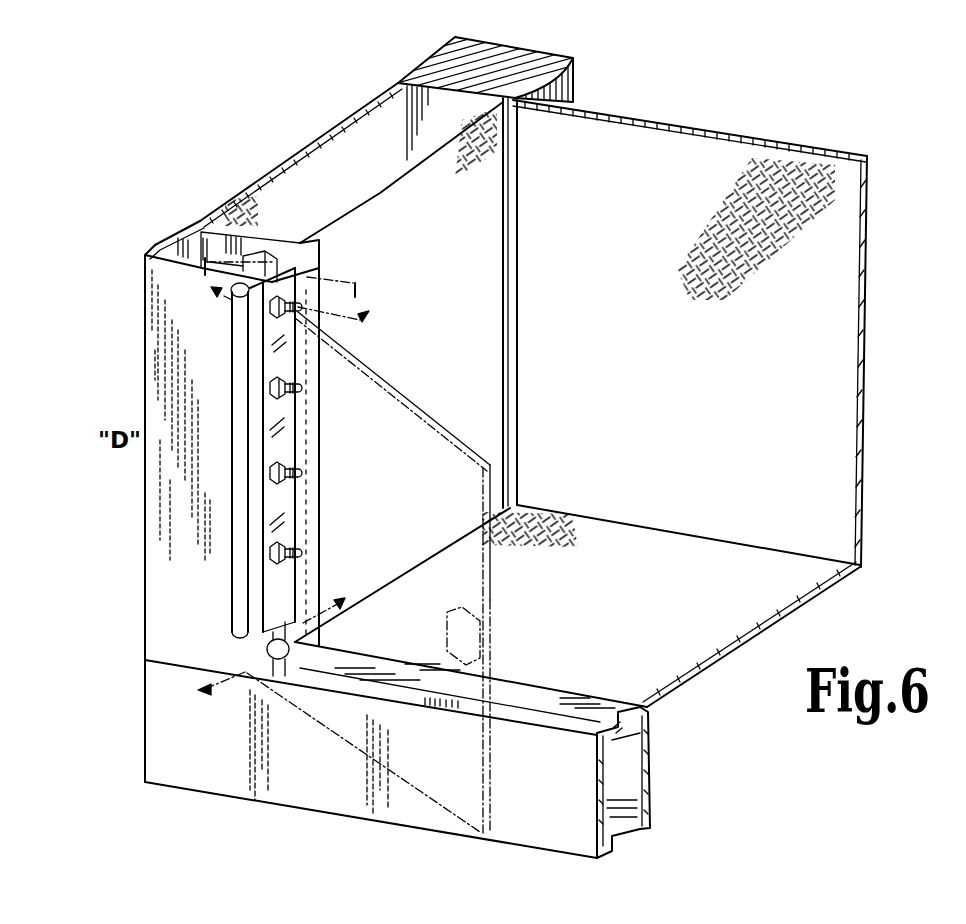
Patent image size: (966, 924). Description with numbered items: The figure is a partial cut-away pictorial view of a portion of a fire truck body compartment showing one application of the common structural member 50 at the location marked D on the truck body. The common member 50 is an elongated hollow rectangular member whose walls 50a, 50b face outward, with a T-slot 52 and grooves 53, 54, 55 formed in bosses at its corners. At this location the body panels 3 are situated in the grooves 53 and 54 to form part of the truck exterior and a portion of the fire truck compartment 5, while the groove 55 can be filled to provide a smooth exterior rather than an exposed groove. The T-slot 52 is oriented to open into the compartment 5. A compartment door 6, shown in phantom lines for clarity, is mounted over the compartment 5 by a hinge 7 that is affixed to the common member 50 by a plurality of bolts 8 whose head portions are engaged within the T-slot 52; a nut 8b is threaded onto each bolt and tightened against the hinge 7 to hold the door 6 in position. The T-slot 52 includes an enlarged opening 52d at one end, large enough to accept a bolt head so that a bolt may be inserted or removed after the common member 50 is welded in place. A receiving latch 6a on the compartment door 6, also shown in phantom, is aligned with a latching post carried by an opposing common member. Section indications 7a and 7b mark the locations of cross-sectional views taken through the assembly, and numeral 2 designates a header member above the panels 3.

The top frame member / header 2 is at (552, 63).
The body panels 3 is at (301, 163).
The fire truck compartment 5 is at (805, 428).
The compartment door 6 is at (491, 823).
The receiving latch 6a is at (485, 640).
The hinge 7 is at (322, 541).
The section line 7a is at (280, 277).
The section line 7b is at (335, 702).
The bolts 8 is at (299, 477).
The nut 8b is at (283, 486).
The common member 50 is at (585, 840).
The wall 50a is at (190, 503).
The wall 50b is at (310, 430).
The T-slot 52 is at (276, 256).
The enlarged opening 52d is at (298, 655).
The groove 53 is at (322, 252).
The groove 54 is at (186, 233).
The groove 55 is at (152, 250).